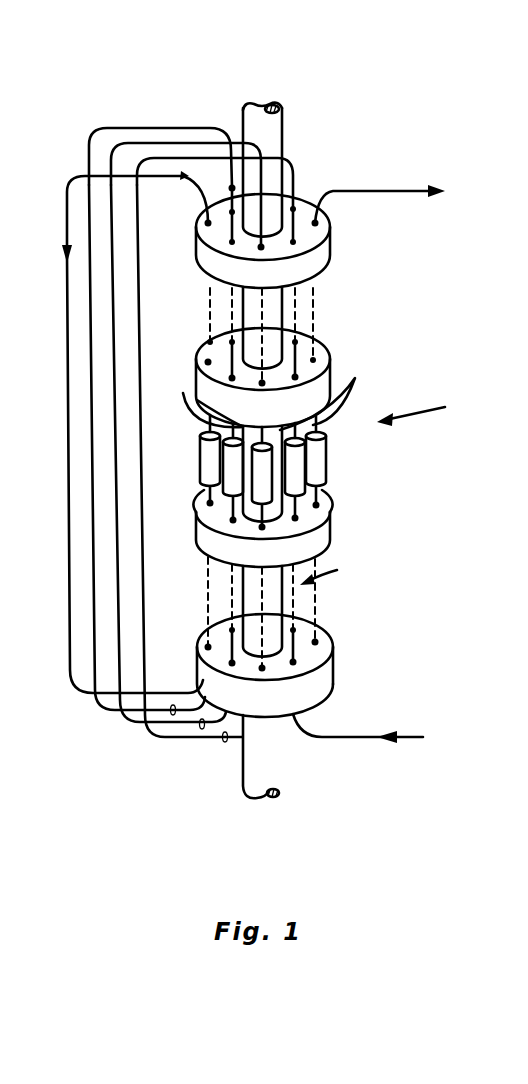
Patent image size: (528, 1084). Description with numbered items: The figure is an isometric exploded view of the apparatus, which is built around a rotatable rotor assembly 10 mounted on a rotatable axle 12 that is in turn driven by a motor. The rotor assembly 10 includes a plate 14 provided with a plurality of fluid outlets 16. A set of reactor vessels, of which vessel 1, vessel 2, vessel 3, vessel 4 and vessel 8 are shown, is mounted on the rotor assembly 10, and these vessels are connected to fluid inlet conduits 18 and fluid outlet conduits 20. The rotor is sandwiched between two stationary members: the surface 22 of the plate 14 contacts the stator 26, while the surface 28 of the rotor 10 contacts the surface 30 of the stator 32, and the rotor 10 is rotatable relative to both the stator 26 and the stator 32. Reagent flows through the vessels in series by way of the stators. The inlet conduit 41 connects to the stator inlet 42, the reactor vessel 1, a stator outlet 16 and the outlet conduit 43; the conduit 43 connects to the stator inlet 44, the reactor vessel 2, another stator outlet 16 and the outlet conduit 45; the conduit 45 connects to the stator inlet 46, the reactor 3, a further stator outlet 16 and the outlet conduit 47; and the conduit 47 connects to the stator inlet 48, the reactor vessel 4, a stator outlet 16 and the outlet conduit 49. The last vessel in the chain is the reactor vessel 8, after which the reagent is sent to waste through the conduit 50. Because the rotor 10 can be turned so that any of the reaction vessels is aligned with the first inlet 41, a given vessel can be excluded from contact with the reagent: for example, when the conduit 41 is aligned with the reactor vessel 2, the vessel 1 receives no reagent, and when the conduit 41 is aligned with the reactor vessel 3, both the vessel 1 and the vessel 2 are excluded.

The reactor vessel 1 is at (297, 463).
The reactor vessel 2 is at (264, 478).
The reactor vessel 3 is at (233, 468).
The reactor vessel 4 is at (200, 448).
The reactor vessel 8 is at (324, 445).
The rotor assembly 10 is at (428, 409).
The axle 12 is at (283, 127).
The plate 14 is at (328, 380).
The fluid outlets 16 is at (232, 377).
The fluid inlet conduits 18 is at (233, 520).
The fluid outlet conduits 20 is at (222, 377).
The surface of plate 22 is at (205, 362).
The stator 26 is at (312, 263).
The surface of rotor 28 is at (217, 562).
The surface of stator 30 is at (320, 645).
The stator 32 is at (332, 672).
The inlet conduit 41 is at (403, 735).
The stator inlet 42 is at (297, 665).
The outlet conduit 43 is at (295, 242).
The stator inlet 44 is at (225, 742).
The outlet conduit 45 is at (262, 246).
The stator inlet 46 is at (202, 729).
The outlet conduit 47 is at (228, 212).
The stator inlet 48 is at (173, 705).
The outlet conduit 49 is at (228, 190).
The conduit 50 is at (417, 187).